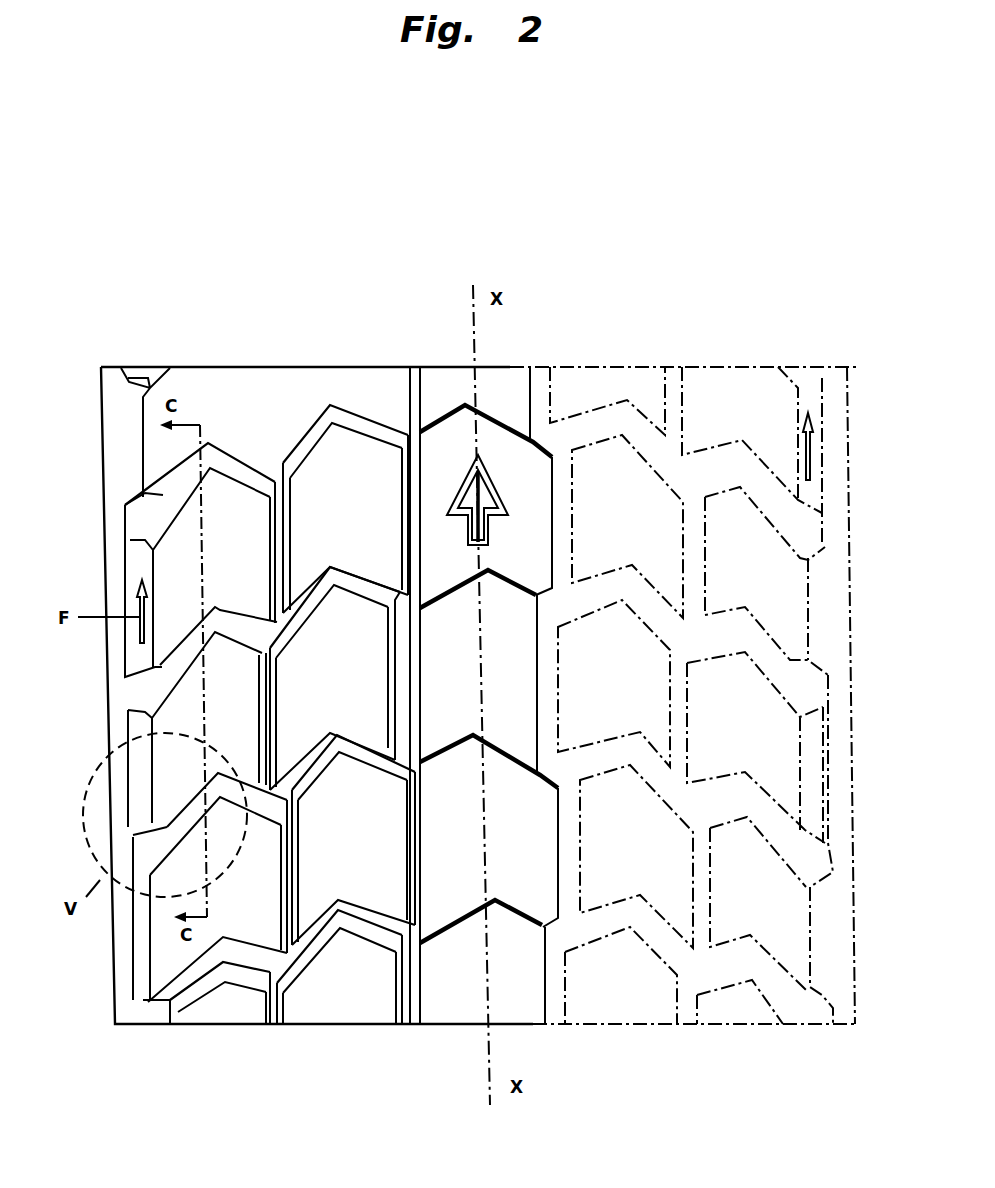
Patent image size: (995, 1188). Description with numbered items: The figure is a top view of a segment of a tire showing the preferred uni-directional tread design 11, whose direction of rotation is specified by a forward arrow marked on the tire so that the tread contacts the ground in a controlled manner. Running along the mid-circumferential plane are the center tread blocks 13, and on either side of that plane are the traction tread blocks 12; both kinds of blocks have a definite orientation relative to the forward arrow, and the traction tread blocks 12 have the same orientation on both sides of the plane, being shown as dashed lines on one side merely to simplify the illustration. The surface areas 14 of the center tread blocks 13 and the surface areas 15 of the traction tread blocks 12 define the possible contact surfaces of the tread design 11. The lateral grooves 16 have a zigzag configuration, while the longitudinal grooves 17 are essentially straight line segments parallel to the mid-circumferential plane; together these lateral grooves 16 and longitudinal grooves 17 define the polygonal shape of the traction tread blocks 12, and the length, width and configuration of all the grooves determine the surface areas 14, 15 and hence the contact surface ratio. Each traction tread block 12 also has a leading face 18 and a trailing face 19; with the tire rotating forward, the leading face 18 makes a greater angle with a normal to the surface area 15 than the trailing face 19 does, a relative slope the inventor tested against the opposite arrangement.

The uni-directional tread design 11 is at (540, 289).
The traction tread blocks 12 is at (130, 563).
The center tread blocks 13 is at (560, 514).
The surface areas of the center tread blocks 14 is at (525, 465).
The surface areas of traction tread blocks 15 is at (343, 462).
The lateral grooves 16 is at (238, 463).
The longitudinal grooves 17 is at (278, 543).
The leading face 18 is at (242, 485).
The trailing face 19 is at (198, 630).